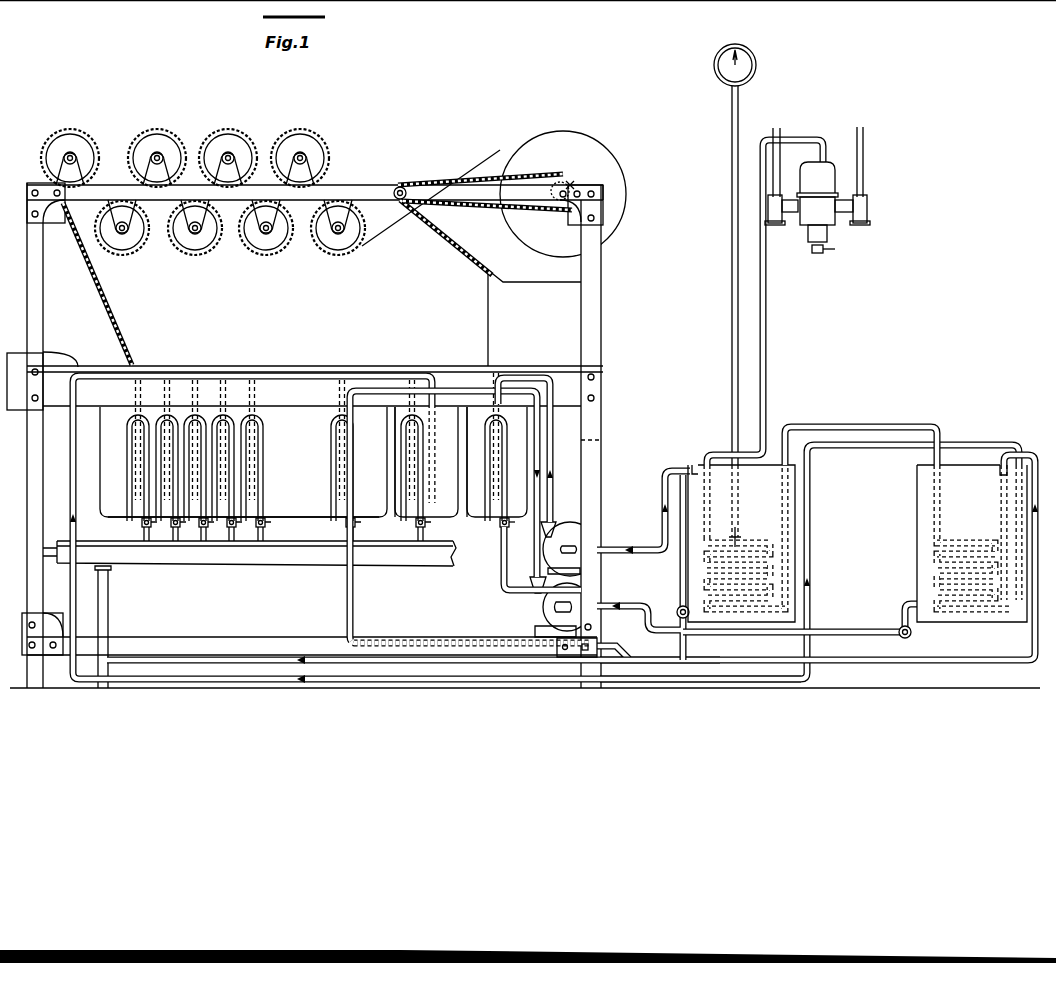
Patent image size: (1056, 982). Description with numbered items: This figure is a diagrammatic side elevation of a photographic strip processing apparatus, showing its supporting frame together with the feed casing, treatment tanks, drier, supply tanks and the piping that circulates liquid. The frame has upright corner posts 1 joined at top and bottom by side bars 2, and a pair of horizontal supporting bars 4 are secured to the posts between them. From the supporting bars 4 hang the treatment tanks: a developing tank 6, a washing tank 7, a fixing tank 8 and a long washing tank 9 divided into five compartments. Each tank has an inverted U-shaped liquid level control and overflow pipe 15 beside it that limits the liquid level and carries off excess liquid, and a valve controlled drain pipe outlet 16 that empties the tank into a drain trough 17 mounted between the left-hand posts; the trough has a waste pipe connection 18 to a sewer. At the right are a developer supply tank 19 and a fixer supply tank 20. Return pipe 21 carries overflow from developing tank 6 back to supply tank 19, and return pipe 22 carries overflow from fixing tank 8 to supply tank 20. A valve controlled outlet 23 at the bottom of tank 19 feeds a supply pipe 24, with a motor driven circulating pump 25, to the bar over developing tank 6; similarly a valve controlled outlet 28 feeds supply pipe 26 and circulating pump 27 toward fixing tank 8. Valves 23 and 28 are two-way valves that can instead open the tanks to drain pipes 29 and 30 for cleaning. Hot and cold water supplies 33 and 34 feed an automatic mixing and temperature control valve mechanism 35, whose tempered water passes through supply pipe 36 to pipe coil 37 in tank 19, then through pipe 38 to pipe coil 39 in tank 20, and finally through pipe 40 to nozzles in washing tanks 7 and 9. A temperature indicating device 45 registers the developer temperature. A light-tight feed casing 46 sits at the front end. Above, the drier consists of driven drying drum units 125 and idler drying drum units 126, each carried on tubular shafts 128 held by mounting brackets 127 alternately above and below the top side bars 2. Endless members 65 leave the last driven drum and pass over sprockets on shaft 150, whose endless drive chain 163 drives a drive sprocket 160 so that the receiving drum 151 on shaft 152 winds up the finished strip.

The corner post 1 is at (33, 262).
The side bar 2 is at (358, 197).
The horizontal supporting bar 4 is at (561, 372).
The developing tank 6 is at (518, 511).
The washing tank 7 is at (437, 513).
The fixing tank 8 is at (313, 515).
The washing tank 9 is at (102, 461).
The liquid level control and overflow pipe 15 is at (139, 415).
The valve controlled drain pipe outlet 16 is at (143, 531).
The drain trough 17 is at (208, 557).
The waste pipe connection 18 is at (107, 604).
The developer supply tank 19 is at (776, 486).
The fixer supply tank 20 is at (917, 486).
The return pipe 21 is at (500, 572).
The return pipe 22 is at (353, 611).
The valve controlled outlet 23 is at (678, 618).
The supply pipe 24 is at (623, 547).
The circulating pump 25 is at (556, 551).
The supply pipe 26 is at (828, 630).
The circulating pump 27 is at (548, 610).
The valve controlled outlet 28 is at (900, 629).
The drain pipe 29 is at (637, 664).
The drain pipe 30 is at (690, 681).
The hot water supply 33 is at (781, 131).
The cold water supply 34 is at (865, 136).
The automatic mixing and temperature control valve mechanism 35 is at (780, 338).
The supply pipe 36 is at (740, 336).
The pipe coil 37 is at (760, 541).
The pipe 38 is at (862, 428).
The pipe coil 39 is at (980, 527).
The pipe 40 is at (73, 537).
The temperature indicating device 45 is at (725, 80).
The feed casing 46 is at (486, 316).
The endless member 65 is at (110, 303).
The driven drying drum unit 125 is at (95, 137).
The idler drying drum unit 126 is at (216, 136).
The mounting bracket 127 is at (76, 171).
The tubular shaft 128 is at (158, 152).
The shaft 150 is at (412, 178).
The receiving drum 151 is at (563, 194).
The shaft 152 is at (559, 194).
The drive sprocket 160 is at (573, 182).
The endless drive chain 163 is at (556, 181).